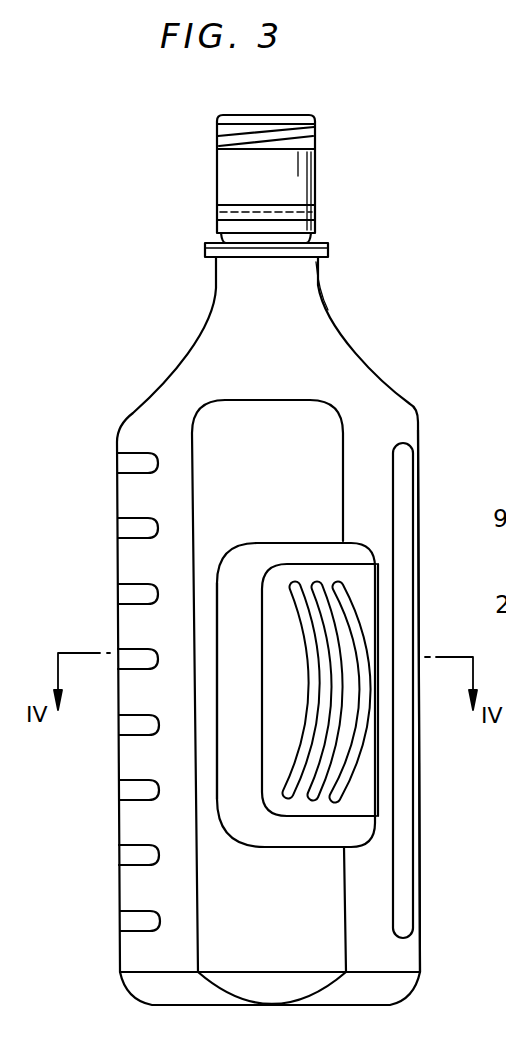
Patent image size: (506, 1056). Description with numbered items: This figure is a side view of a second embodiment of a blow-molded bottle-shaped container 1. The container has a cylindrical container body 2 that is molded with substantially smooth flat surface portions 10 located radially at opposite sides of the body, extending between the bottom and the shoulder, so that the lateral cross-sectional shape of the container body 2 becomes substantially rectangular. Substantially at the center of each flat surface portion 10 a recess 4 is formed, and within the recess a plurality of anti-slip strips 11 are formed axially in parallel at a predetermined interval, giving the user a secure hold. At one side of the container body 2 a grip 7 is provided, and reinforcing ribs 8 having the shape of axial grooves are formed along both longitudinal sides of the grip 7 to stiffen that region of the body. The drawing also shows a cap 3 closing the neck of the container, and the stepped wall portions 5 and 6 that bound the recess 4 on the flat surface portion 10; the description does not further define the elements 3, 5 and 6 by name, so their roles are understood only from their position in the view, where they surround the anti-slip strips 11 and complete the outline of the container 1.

The bottle-shaped container 1 is at (117, 433).
The container body 2 is at (130, 560).
The cap 3 is at (318, 237).
The recess 4 is at (240, 788).
The inner recess of grip panel 5 is at (262, 742).
The outer recess wall 6 is at (233, 682).
The grip 7 is at (419, 421).
The reinforcing rib 8 is at (405, 757).
The flat surface portion 10 is at (316, 422).
The anti-slip strip 11 is at (367, 697).